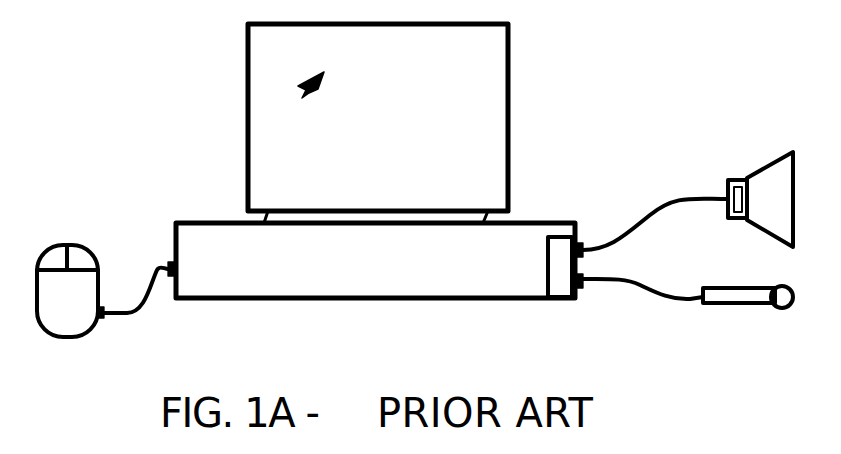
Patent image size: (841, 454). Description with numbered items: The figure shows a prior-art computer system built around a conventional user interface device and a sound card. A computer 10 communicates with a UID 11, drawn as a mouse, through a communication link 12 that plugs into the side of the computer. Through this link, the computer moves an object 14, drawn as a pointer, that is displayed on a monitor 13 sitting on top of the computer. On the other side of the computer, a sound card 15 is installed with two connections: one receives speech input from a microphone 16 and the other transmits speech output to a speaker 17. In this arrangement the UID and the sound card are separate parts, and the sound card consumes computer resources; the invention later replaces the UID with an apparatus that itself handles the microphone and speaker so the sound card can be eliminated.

The computer 10 is at (530, 300).
The UID 11 is at (88, 242).
The communication link 12 is at (137, 277).
The monitor 13 is at (247, 68).
The object 14 is at (310, 93).
The sound card 15 is at (547, 267).
The microphone 16 is at (762, 287).
The speaker 17 is at (757, 177).